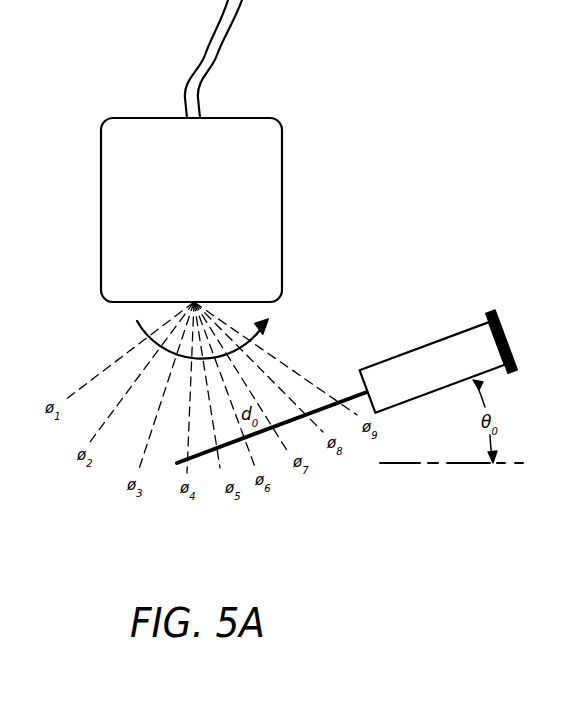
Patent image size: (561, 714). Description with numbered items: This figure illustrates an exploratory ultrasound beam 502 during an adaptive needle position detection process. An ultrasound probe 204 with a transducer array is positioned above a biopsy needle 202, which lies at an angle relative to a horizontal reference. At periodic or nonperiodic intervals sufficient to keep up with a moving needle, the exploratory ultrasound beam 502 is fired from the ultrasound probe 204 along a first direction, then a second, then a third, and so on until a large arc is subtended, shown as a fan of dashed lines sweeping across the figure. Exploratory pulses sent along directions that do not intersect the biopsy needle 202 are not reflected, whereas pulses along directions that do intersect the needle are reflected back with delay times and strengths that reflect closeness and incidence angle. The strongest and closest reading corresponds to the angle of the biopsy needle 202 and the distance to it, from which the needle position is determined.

The ultrasound probe 204 is at (236, 118).
The biopsy needle 202 is at (422, 345).
The exploratory ultrasound beam 502 is at (92, 372).